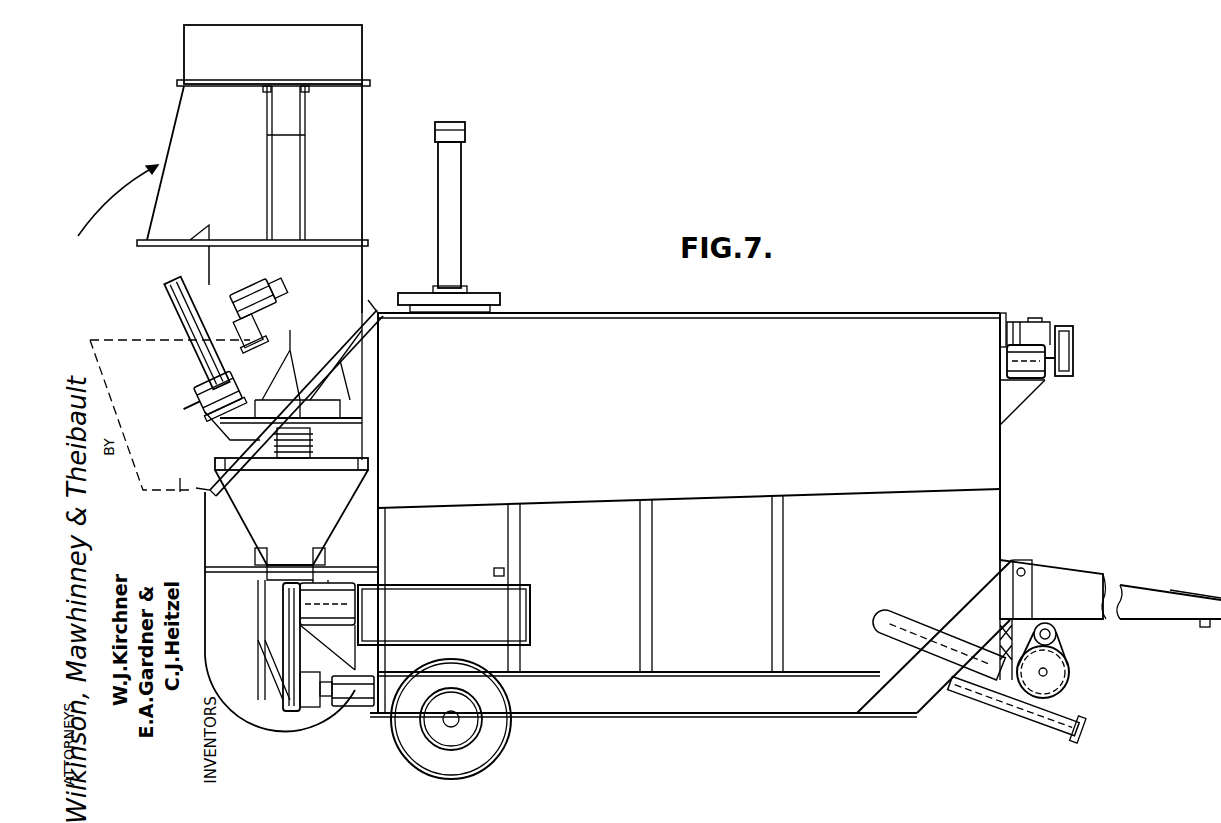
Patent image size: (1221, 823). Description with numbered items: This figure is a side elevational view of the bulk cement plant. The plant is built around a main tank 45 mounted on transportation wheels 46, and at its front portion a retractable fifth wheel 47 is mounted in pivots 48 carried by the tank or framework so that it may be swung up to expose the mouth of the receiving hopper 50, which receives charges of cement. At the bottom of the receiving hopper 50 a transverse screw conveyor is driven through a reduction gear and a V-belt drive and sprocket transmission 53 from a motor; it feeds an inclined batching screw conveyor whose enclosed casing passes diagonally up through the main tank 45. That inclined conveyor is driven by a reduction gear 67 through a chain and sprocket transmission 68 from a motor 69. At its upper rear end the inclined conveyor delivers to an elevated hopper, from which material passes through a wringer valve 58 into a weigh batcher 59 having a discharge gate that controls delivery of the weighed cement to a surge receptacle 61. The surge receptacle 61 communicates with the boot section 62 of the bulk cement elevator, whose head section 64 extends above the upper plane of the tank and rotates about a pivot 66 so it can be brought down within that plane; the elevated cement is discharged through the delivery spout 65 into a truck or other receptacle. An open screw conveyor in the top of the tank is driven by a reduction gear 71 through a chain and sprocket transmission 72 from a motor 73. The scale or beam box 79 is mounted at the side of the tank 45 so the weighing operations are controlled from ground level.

The main tank 45 is at (694, 409).
The transportation wheels 46 is at (486, 744).
The retractable fifth wheel 47 is at (1130, 598).
The pivots 48 is at (1027, 572).
The receiving hopper 50 is at (1058, 642).
The V-belt drive and sprocket transmission 53 is at (1069, 674).
The wringer valve 58 is at (312, 432).
The weigh batcher 59 is at (300, 512).
The surge receptacle 61 is at (292, 712).
The boot section 62 is at (252, 710).
The head section 64 is at (353, 219).
The delivery spout 65 is at (176, 242).
The pivot 66 is at (262, 420).
The reduction gear 67 is at (290, 276).
The chain and sprocket transmission 68 is at (196, 330).
The motor 69 is at (203, 410).
The reduction gear 71 is at (1040, 325).
The chain and sprocket transmission 72 is at (1072, 350).
The motor 73 is at (1026, 378).
The scale or beam box 79 is at (452, 592).